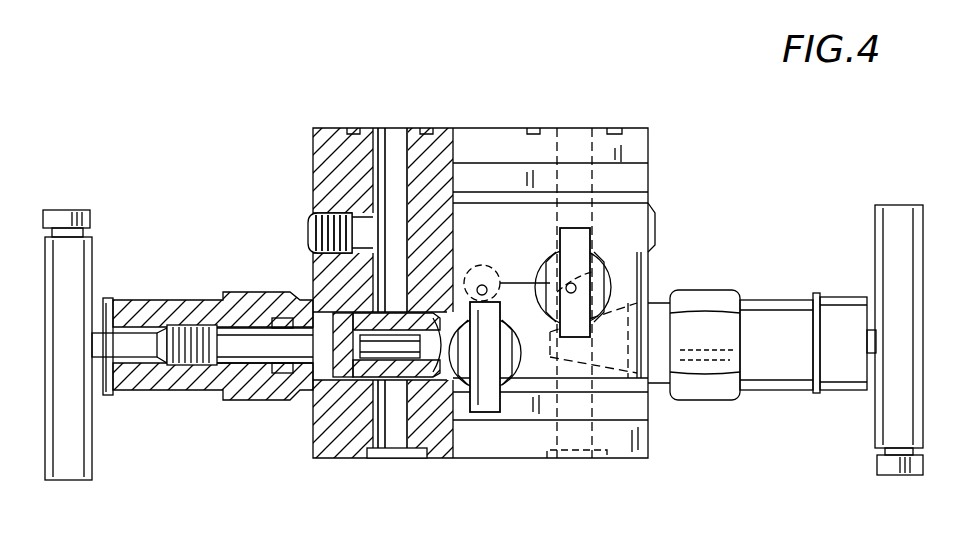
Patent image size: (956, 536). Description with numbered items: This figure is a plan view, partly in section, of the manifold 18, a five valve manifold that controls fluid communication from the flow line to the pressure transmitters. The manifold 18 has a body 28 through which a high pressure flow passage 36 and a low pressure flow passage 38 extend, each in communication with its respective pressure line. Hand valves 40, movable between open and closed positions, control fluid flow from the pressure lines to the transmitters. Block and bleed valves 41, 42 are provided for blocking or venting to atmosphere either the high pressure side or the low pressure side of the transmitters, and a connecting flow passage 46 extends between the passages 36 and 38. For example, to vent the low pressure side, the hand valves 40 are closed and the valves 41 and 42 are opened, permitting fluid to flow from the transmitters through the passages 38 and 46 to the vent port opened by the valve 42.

The manifold 18 is at (657, 198).
The body 28 is at (322, 176).
The high pressure flow passage 36 is at (377, 142).
The low pressure flow passage 38 is at (558, 142).
The hand valves 40 is at (184, 306).
The block and bleed valve 41 is at (578, 250).
The block and bleed valve 42 is at (500, 318).
The connecting flow passage 46 is at (534, 277).